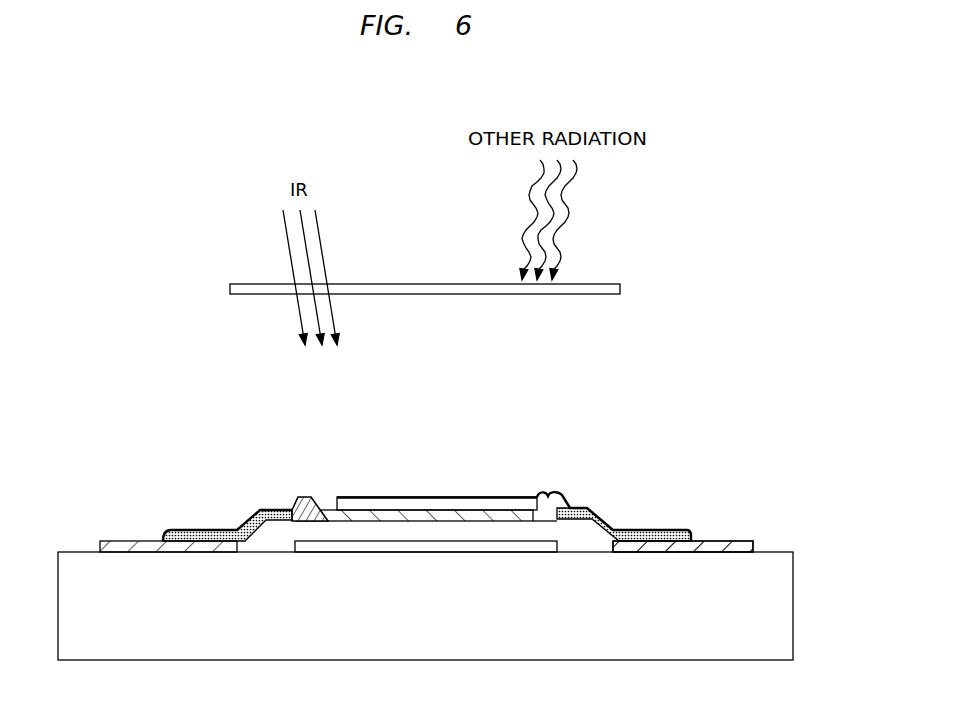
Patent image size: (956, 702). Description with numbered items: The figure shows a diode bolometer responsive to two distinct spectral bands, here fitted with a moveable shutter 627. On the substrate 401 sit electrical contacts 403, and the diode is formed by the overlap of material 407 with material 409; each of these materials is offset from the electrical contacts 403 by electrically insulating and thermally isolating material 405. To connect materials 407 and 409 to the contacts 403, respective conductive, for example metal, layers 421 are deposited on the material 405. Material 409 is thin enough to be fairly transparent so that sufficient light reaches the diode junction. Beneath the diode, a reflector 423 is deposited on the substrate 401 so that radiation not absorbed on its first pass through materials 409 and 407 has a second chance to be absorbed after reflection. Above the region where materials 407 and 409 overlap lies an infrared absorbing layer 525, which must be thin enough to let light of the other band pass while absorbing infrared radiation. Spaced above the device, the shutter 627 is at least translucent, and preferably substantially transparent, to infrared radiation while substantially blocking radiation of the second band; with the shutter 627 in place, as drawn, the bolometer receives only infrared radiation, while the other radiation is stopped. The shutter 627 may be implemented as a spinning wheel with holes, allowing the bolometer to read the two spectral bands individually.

The substrate 401 is at (797, 610).
The electrical contacts 403 is at (99, 544).
The electrically insulating and thermally isolating material 405 is at (660, 535).
The material 407 is at (313, 502).
The material 409 is at (512, 502).
The conductive layers 421 is at (253, 513).
The reflector 423 is at (424, 554).
The infrared absorbing layer 525 is at (397, 495).
The moveable shutter 627 is at (429, 283).